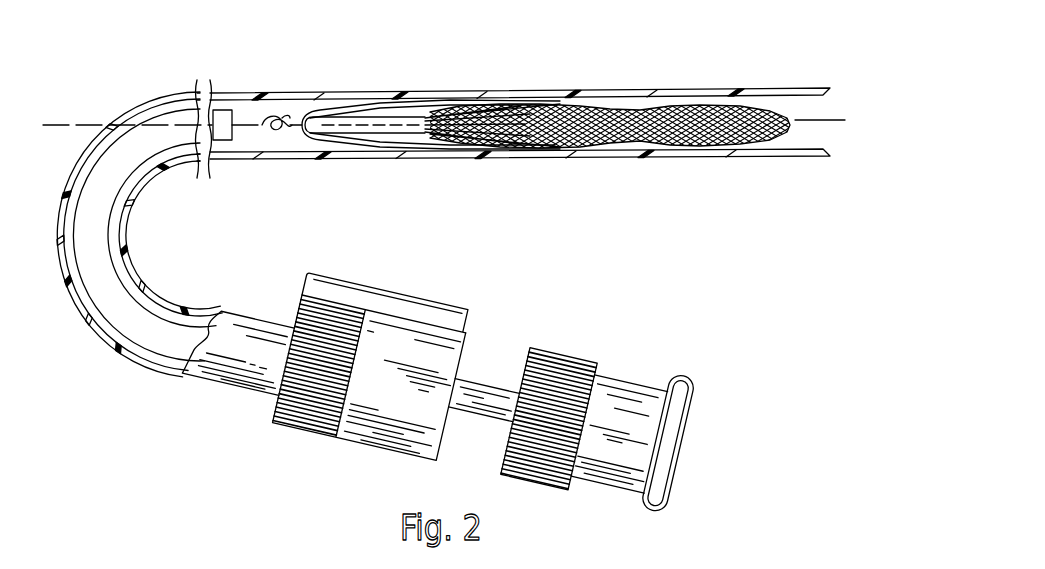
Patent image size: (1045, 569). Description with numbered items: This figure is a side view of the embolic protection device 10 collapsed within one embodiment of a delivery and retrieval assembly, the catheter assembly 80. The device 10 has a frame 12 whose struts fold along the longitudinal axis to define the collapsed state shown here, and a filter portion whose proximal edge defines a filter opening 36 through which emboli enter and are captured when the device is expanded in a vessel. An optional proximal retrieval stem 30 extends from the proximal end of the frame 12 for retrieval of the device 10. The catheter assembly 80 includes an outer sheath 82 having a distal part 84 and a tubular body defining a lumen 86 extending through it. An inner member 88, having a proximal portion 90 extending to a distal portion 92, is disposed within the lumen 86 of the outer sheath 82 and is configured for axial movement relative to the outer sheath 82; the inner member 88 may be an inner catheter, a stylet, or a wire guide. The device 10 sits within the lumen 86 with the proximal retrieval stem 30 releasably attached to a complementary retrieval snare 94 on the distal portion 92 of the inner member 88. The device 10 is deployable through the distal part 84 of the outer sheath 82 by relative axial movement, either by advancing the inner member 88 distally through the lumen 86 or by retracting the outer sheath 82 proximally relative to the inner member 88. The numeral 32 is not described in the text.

The embolic protection device 10 is at (363, 91).
The frame 12 is at (363, 143).
The proximal retrieval stem 30 is at (288, 118).
The outer sheath 32 is at (621, 88).
The filter opening 36 is at (533, 100).
The catheter assembly 80 is at (548, 187).
The outer sheath 82 is at (684, 161).
The distal part 84 is at (776, 88).
The lumen 86 is at (708, 107).
The inner member 88 is at (214, 92).
The proximal portion 90 is at (150, 333).
The distal portion 92 is at (228, 110).
The retrieval snare 94 is at (264, 134).